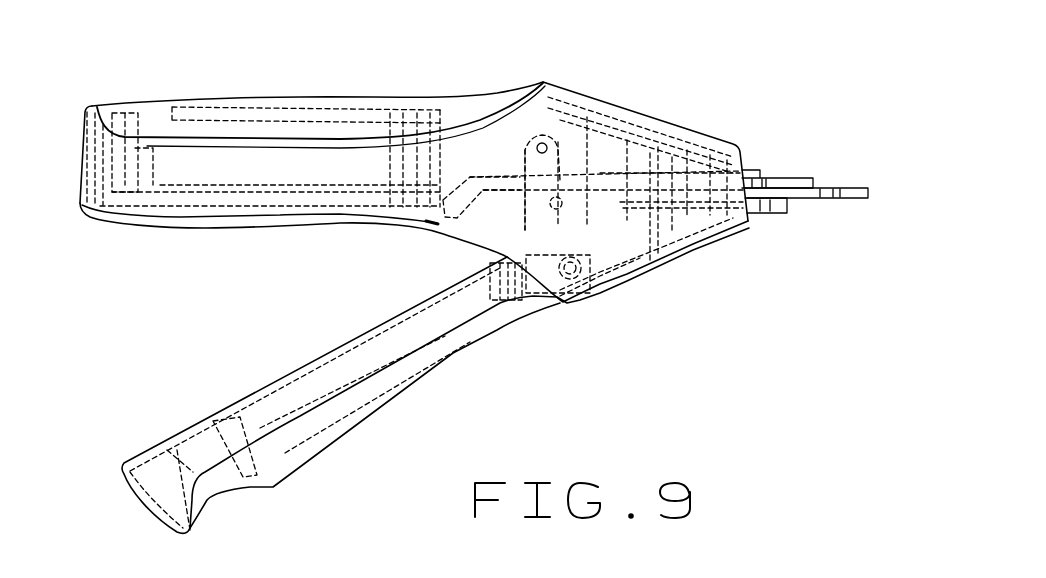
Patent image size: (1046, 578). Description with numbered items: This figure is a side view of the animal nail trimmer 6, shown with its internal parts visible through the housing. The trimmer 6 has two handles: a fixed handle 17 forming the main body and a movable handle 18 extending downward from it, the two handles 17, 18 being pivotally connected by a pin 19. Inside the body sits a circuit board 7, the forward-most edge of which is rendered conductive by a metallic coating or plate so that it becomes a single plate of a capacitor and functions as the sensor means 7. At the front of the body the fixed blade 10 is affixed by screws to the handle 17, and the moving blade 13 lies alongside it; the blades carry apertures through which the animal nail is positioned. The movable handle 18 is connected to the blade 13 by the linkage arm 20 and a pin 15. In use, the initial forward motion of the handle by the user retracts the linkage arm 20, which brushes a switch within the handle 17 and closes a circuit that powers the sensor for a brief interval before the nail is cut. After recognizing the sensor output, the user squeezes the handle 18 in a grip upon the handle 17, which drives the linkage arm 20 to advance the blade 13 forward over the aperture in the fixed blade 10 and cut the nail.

The trimmer 6 is at (160, 76).
The handle 17 is at (80, 160).
The linkage arm 20 is at (483, 183).
The pin 15 is at (542, 148).
The pin 19 is at (565, 204).
The blade 13 is at (777, 178).
The fixed blade 10 is at (868, 191).
The circuit board 7 is at (746, 212).
The handle 18 is at (140, 500).